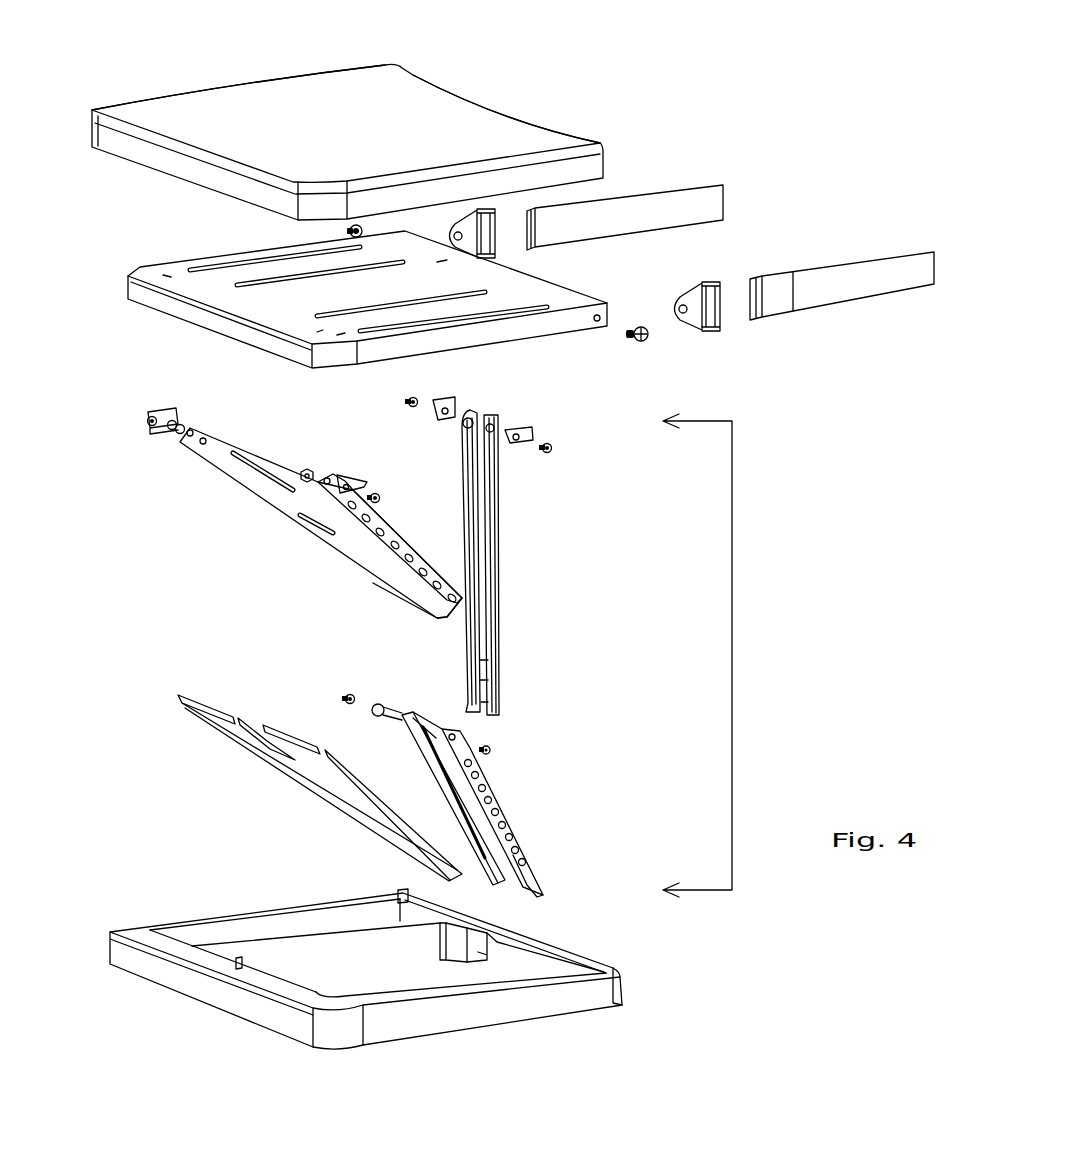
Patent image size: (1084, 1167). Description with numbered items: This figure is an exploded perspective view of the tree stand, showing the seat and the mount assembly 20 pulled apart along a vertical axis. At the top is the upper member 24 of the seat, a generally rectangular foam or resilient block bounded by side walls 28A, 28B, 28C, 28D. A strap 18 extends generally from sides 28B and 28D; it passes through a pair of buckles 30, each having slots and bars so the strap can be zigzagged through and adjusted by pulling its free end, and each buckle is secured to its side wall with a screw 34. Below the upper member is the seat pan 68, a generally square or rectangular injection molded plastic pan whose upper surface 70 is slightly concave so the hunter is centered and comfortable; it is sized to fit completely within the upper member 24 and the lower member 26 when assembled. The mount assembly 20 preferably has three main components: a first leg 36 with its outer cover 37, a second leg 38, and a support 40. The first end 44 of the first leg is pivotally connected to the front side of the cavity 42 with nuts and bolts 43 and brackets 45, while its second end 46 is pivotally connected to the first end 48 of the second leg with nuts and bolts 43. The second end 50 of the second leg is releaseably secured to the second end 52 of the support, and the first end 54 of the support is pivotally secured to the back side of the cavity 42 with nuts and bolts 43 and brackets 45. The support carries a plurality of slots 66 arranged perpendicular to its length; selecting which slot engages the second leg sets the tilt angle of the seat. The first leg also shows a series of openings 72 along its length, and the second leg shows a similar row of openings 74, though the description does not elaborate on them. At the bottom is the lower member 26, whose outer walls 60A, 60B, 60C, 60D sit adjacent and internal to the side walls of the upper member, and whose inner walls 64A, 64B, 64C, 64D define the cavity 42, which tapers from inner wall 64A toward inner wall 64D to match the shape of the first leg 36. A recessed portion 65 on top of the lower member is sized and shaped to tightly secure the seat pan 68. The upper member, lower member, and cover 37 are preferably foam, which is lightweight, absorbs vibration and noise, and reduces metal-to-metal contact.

The strap 18 is at (705, 200).
The mount assembly 20 is at (715, 655).
The upper member 24 is at (354, 111).
The lower member 26 is at (415, 985).
The side wall 28A is at (138, 150).
The side wall 28B is at (505, 180).
The side wall 28C is at (447, 90).
The side wall 28D is at (255, 80).
The buckle 30 is at (497, 228).
The screw 34 is at (348, 232).
The first leg 36 is at (306, 503).
The outer cover 37 is at (300, 778).
The second leg 38 is at (440, 786).
The support 40 is at (519, 562).
The cavity 42 is at (367, 973).
The nuts and bolts 43 is at (177, 433).
The first end 44 is at (227, 463).
The bracket 45 is at (158, 410).
The second end 46 is at (402, 582).
The first end 48 is at (390, 742).
The second end 50 is at (528, 865).
The second end 52 is at (497, 650).
The first end 54 is at (477, 460).
The outer wall 60A is at (192, 983).
The outer wall 60B is at (507, 1007).
The outer wall 60C is at (598, 957).
The outer wall 60D is at (192, 915).
The inner wall 64A is at (292, 975).
The inner wall 64B is at (417, 975).
The inner wall 64C is at (453, 938).
The inner wall 64D is at (320, 947).
The recessed portion 65 is at (588, 992).
The slots 66 is at (497, 703).
The seat pan 68 is at (337, 299).
The upper surface 70 is at (307, 297).
The holes 72 is at (220, 445).
The holes 74 is at (493, 795).